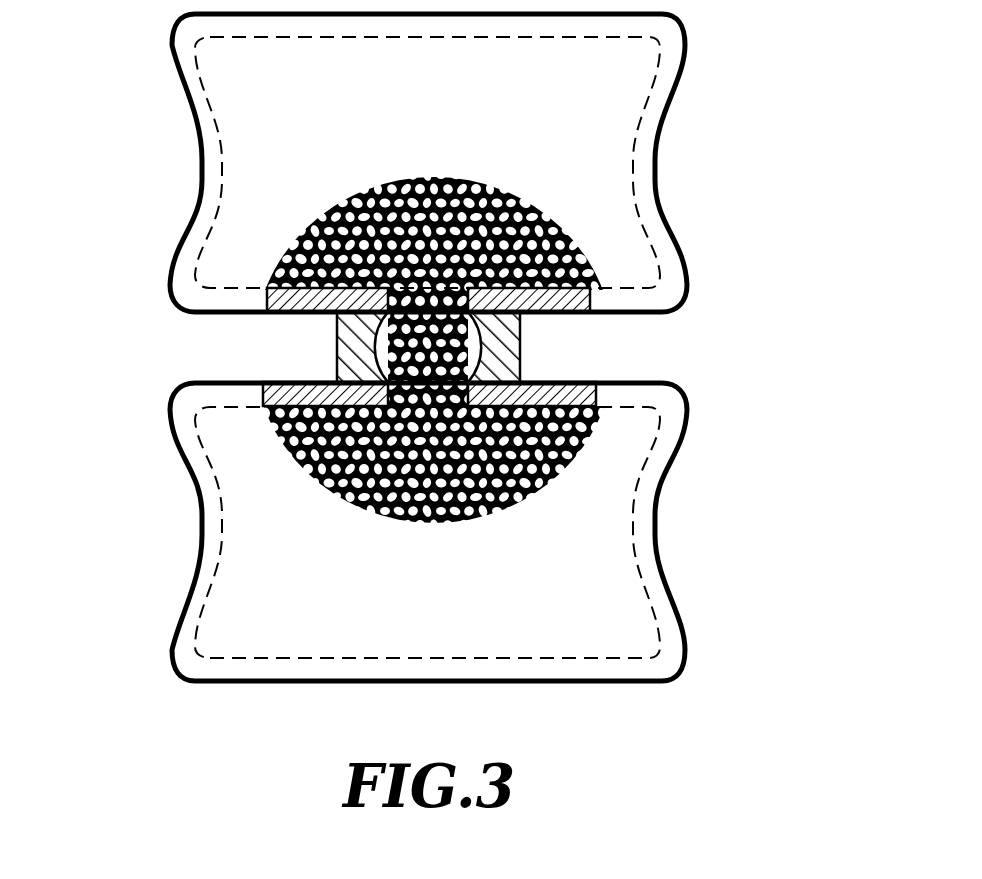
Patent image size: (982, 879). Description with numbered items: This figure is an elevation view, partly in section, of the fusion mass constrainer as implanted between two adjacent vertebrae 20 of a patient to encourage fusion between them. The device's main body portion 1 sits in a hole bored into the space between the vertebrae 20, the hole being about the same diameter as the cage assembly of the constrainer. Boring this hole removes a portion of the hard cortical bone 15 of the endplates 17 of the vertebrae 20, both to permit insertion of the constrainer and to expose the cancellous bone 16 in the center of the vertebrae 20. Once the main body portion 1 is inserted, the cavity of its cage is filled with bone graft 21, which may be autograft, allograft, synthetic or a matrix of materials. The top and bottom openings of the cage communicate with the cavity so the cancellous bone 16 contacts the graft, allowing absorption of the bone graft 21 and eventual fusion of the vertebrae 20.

The main body portion 1 is at (302, 351).
The hard cortical bone 15 is at (604, 313).
The cancellous bone 16 is at (457, 235).
The endplates 17 is at (253, 313).
The vertebrae 20 is at (686, 106).
The bone graft 21 is at (405, 280).